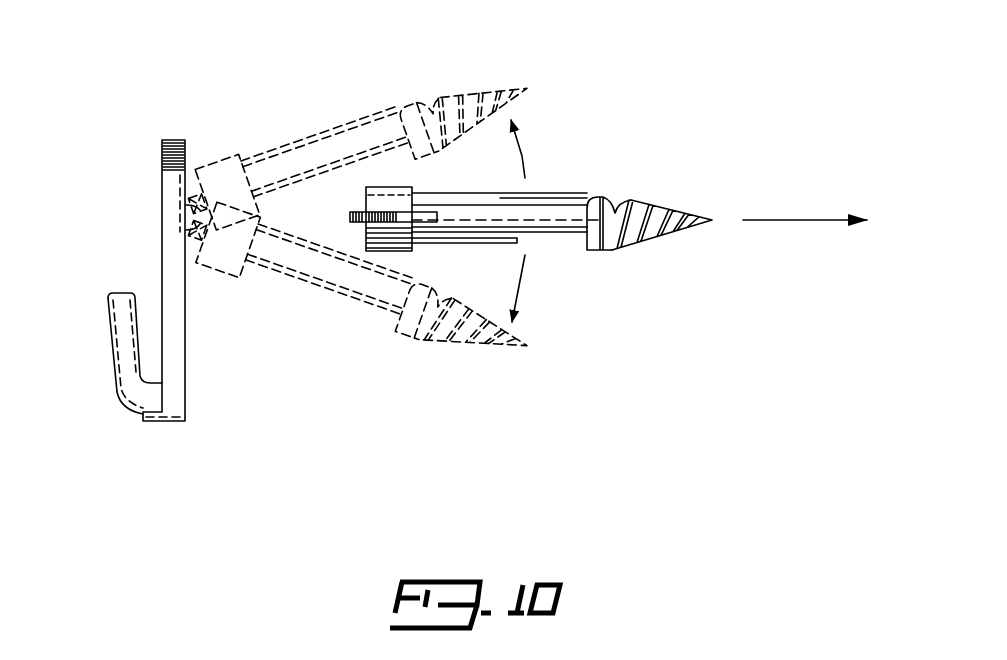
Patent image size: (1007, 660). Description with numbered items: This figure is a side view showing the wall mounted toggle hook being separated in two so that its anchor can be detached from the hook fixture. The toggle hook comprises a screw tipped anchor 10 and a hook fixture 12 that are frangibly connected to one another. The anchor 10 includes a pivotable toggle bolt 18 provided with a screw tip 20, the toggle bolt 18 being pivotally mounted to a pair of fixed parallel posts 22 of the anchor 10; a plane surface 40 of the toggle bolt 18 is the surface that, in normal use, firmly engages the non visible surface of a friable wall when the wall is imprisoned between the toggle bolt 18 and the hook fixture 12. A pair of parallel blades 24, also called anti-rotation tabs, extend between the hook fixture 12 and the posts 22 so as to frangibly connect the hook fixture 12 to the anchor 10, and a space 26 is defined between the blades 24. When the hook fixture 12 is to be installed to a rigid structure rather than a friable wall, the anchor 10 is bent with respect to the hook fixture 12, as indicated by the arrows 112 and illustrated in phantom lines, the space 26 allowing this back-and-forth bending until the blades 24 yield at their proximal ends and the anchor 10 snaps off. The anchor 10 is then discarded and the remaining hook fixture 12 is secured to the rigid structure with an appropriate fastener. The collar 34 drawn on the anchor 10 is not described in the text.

The screw tipped anchor 10 is at (476, 231).
The hook fixture 12 is at (122, 407).
The toggle bolt 18 is at (480, 88).
The screw tip 20 is at (510, 83).
The fixed parallel posts 22 is at (303, 162).
The parallel blades 24 is at (196, 205).
The space 26 is at (190, 226).
The collar 34 is at (216, 168).
The plane surface 40 is at (552, 196).
The arrows 112 is at (524, 156).